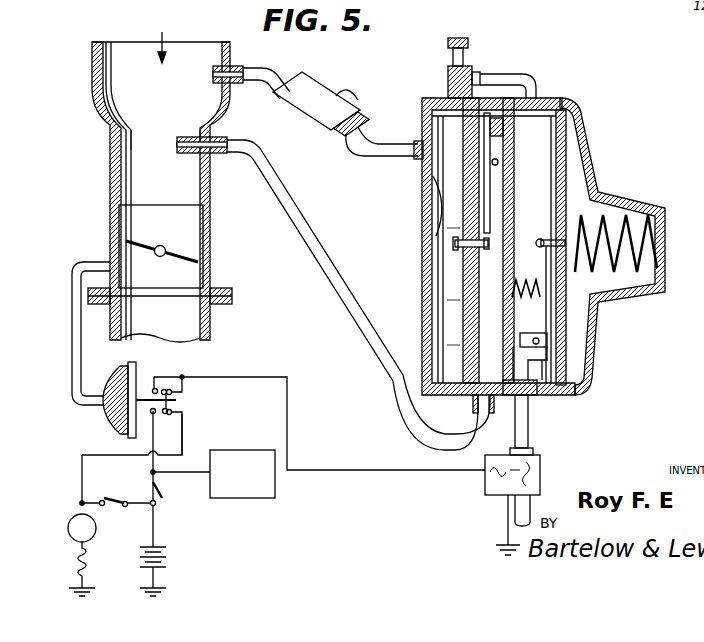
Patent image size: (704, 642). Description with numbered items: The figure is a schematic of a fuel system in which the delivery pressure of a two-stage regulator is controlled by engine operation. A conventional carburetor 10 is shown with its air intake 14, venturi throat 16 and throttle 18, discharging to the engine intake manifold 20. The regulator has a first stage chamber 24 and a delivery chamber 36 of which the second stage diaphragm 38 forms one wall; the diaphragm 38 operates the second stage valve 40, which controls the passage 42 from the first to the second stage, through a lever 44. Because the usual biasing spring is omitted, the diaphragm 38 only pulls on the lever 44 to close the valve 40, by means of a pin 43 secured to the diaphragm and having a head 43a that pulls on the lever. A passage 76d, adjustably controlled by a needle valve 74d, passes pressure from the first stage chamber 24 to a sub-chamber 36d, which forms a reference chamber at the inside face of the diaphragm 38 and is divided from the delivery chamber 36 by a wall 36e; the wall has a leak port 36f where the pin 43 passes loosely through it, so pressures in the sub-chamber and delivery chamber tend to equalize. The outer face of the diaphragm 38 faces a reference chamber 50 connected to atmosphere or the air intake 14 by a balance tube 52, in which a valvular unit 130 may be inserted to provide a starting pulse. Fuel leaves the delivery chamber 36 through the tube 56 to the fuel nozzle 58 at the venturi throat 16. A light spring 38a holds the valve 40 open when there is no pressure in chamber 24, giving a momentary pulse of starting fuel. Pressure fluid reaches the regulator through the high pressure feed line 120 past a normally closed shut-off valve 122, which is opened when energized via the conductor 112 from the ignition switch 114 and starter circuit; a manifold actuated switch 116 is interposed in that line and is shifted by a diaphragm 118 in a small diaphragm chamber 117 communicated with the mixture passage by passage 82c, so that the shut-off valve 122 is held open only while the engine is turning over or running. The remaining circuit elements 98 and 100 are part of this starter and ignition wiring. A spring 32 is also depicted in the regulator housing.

The carburetor 10 is at (100, 224).
The air intake 14 is at (162, 60).
The venturi throat 16 is at (165, 132).
The throttle 18 is at (148, 241).
The engine intake manifold 20 is at (160, 304).
The first stage chamber 24 is at (530, 221).
The spring 32 is at (636, 215).
The delivery chamber 36 is at (480, 346).
The sub-chamber 36d is at (455, 308).
The wall 36e is at (465, 339).
The leak port 36f is at (457, 233).
The second stage diaphragm 38 is at (441, 287).
The light spring 38a is at (433, 212).
The second stage valve 40 is at (492, 137).
The passage 42 is at (566, 104).
The pin 43 is at (465, 250).
The head 43a is at (495, 248).
The lever 44 is at (484, 197).
The reference chamber 50 is at (424, 110).
The balance tube 52 is at (260, 84).
The tube 56 is at (324, 306).
The fuel nozzle 58 is at (180, 152).
The needle valve 74d is at (464, 78).
The passage 76d is at (510, 80).
The passage 82c is at (77, 350).
The solenoid coil 98 is at (68, 529).
The switch 100 is at (124, 499).
The conductor 112 is at (362, 470).
The ignition switch 114 is at (162, 499).
The manifold actuated switch 116 is at (186, 399).
The diaphragm chamber 117 is at (112, 424).
The diaphragm 118 is at (142, 384).
The high pressure feed line 120 is at (529, 412).
The shut-off valve 122 is at (546, 449).
The valvular unit 130 is at (304, 128).